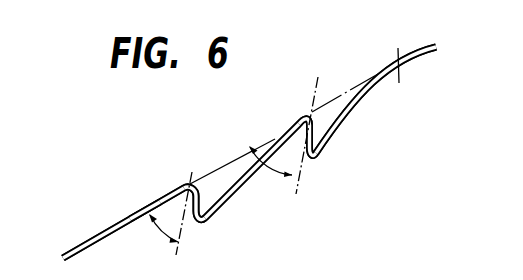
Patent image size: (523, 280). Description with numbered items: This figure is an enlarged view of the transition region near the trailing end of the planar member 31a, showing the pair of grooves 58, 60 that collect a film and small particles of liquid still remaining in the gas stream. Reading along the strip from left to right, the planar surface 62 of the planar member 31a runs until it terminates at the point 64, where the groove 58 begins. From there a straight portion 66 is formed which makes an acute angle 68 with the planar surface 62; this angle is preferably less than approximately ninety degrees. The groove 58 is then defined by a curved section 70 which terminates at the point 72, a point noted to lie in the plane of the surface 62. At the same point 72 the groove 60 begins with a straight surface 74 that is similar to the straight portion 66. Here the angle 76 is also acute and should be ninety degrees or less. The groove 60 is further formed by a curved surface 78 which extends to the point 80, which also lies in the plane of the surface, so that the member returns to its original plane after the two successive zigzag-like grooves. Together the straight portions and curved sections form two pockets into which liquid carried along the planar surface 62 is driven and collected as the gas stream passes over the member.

The groove 58 is at (251, 147).
The groove 60 is at (351, 98).
The planar surface 62 is at (92, 237).
The point 64 is at (189, 184).
The straight portion 66 is at (200, 205).
The acute angle 68 is at (162, 238).
The curved section 70 is at (214, 213).
The point 72 is at (305, 112).
The straight surface 74 is at (315, 109).
The angle 76 is at (271, 168).
The curved surface 78 is at (322, 146).
The point 80 is at (401, 60).
The planar member 31a is at (144, 206).